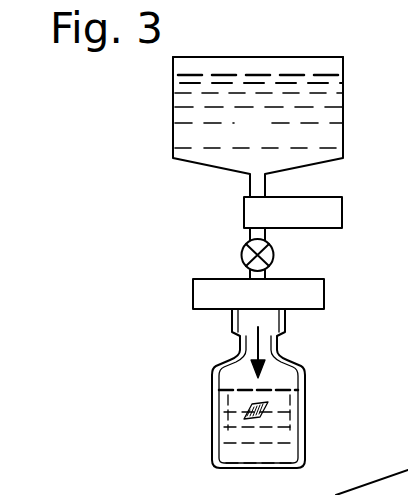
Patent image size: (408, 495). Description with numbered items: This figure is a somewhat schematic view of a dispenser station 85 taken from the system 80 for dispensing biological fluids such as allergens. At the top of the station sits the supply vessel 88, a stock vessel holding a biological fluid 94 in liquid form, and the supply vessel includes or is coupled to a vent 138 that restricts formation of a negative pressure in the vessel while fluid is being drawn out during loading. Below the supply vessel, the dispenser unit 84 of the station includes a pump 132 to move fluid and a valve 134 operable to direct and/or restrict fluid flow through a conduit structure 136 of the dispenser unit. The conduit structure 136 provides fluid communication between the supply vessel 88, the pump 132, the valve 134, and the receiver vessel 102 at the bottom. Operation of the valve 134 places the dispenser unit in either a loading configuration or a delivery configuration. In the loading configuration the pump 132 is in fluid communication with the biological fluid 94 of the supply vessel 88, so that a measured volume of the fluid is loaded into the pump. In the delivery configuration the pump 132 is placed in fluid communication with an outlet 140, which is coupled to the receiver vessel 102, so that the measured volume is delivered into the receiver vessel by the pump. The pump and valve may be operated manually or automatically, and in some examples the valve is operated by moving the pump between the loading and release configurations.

The system 80 is at (76, 108).
The dispenser station 85 is at (123, 140).
The supply vessel 88 is at (292, 56).
The vent 138 is at (203, 50).
The biological fluid 94 is at (268, 136).
The pump 132 is at (284, 196).
The conduit structure 136 is at (250, 276).
The valve 134 is at (273, 258).
The dispenser unit 84 is at (189, 268).
The outlet 140 is at (292, 311).
The receiver vessel 102 is at (212, 401).